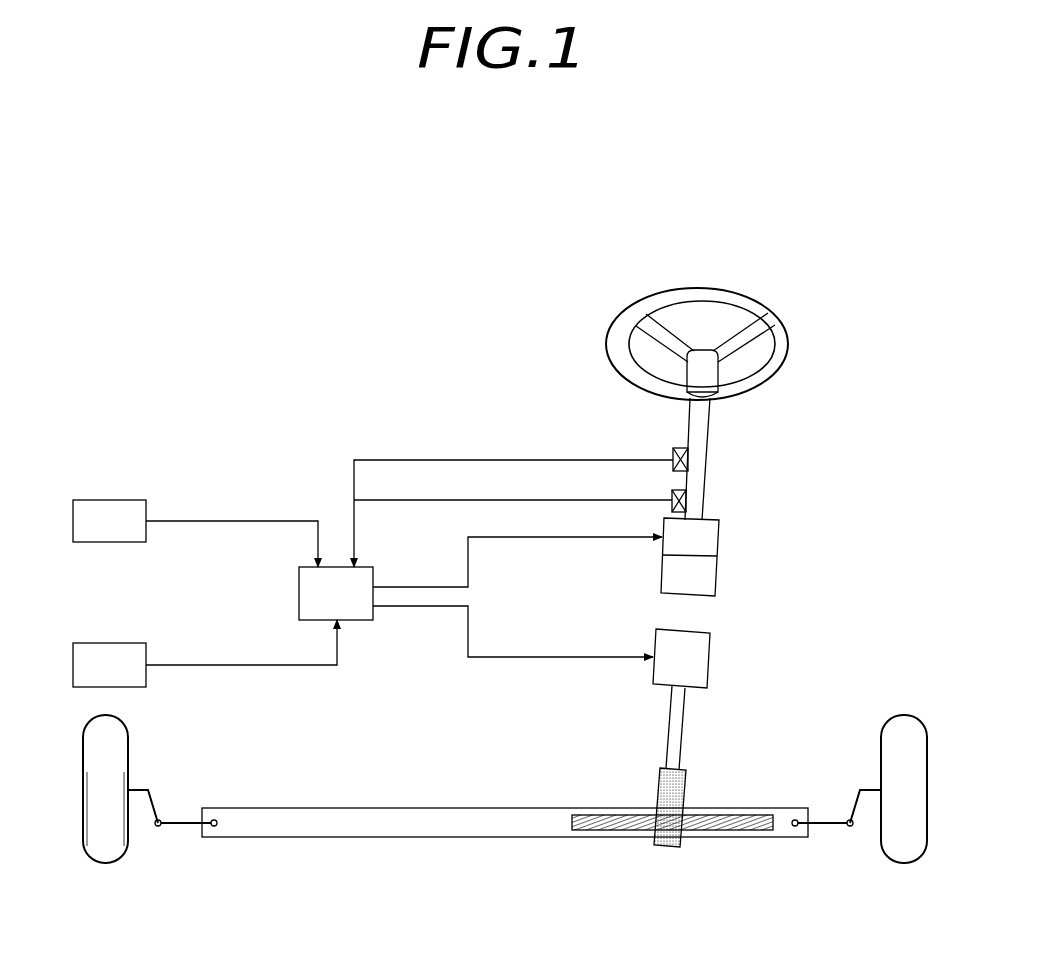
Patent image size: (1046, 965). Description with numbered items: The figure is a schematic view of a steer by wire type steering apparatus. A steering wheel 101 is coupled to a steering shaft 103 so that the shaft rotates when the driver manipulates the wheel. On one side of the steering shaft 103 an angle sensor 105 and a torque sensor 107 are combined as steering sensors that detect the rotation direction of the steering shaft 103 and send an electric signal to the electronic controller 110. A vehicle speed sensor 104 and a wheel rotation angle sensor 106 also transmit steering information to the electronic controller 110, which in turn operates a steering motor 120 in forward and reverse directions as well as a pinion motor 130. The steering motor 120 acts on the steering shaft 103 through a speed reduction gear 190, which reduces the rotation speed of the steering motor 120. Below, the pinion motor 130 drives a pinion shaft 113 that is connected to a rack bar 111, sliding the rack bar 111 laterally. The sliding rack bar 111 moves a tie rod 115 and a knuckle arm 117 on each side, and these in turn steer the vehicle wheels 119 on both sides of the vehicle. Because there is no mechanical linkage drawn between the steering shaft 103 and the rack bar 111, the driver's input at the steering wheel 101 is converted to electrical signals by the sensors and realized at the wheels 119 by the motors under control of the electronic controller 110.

The steering wheel 101 is at (790, 345).
The steering shaft 103 is at (701, 475).
The vehicle speed sensor 104 is at (106, 498).
The angle sensor 105 is at (673, 451).
The wheel rotation angle sensor 106 is at (108, 641).
The torque sensor 107 is at (672, 493).
The electronic controller 110 is at (299, 592).
The rack bar 111 is at (417, 830).
The pinion shaft 113 is at (681, 784).
The tie rod 115 is at (170, 826).
The knuckle arm 117 is at (153, 806).
The vehicle wheel 119 is at (128, 744).
The steering motor 120 is at (717, 543).
The pinion motor 130 is at (710, 645).
The speed reduction gear 190 is at (715, 583).